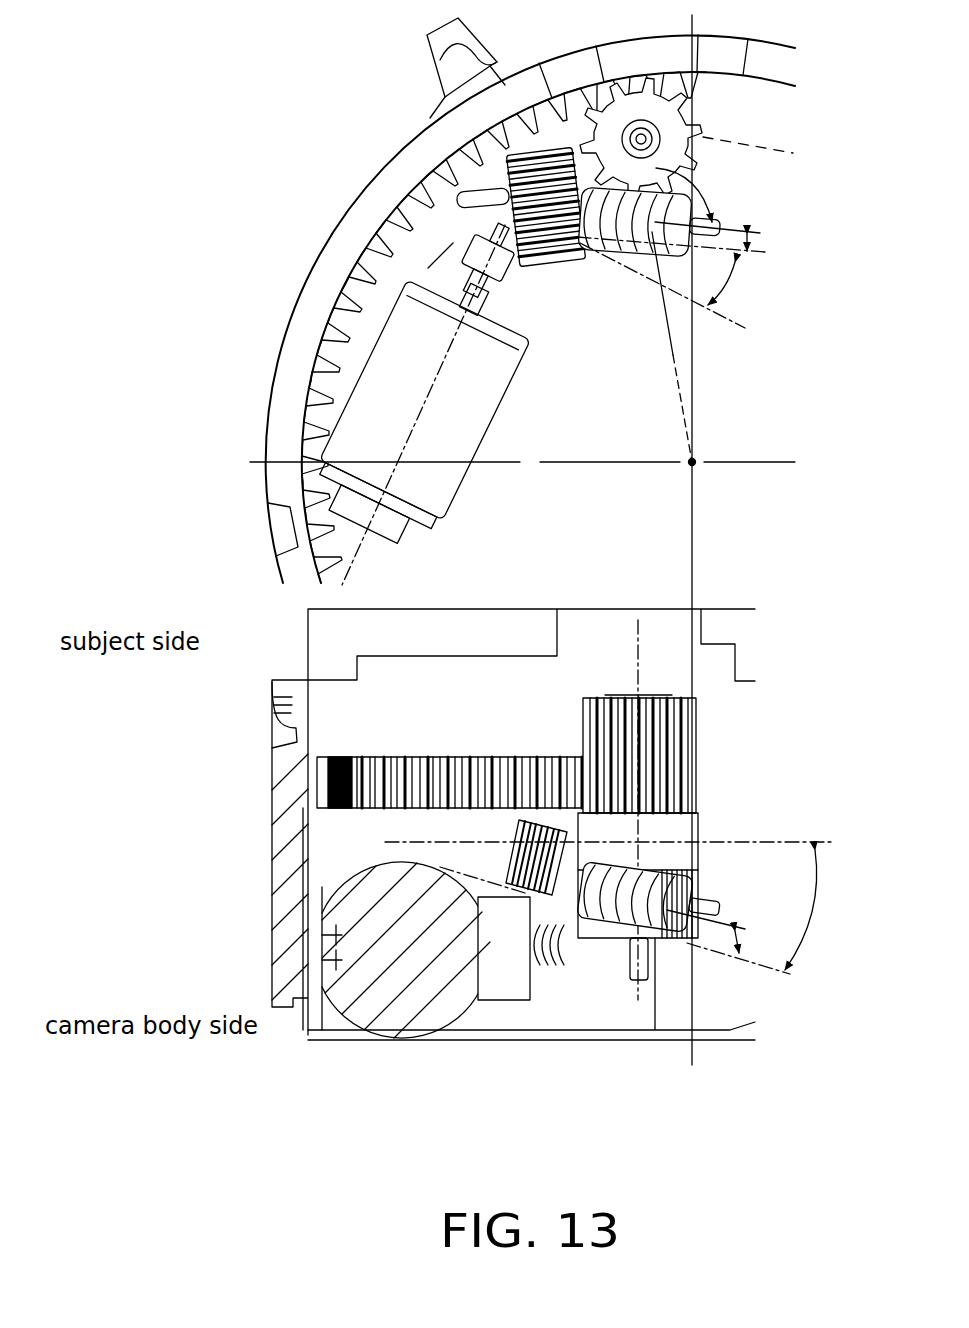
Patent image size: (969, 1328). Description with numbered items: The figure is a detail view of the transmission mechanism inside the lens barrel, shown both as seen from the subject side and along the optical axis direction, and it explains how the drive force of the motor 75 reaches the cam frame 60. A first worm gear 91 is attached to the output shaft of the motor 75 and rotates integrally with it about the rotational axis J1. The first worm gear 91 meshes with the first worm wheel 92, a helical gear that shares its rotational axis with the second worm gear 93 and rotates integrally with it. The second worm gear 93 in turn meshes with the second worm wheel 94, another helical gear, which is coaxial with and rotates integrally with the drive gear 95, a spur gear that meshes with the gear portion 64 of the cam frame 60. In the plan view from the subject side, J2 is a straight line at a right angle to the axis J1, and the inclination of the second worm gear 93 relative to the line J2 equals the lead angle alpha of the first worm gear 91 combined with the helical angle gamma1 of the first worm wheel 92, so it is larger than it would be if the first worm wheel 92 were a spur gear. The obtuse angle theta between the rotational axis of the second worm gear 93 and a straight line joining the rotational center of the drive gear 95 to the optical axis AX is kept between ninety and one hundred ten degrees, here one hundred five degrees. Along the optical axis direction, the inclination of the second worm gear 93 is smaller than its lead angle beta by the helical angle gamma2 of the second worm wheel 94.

The cam frame 60 is at (320, 282).
The gear portion 64 is at (318, 358).
The motor 75 is at (385, 420).
The first worm gear 91 is at (470, 247).
The first worm wheel 92 is at (520, 182).
The second worm gear 93 is at (655, 237).
The second worm wheel 94 is at (697, 935).
The drive gear 95 is at (705, 128).
The optical axis AX is at (692, 462).
The rotational axis of the first worm gear J1 is at (420, 418).
The straight line at a right angle to rotational axis J1 J2 is at (728, 323).
The obtuse angle theta is at (688, 195).
The lead angle of the first worm gear alpha is at (732, 284).
The lead angle of the second worm gear beta is at (809, 910).
The helical angle of the first worm wheel gamma1 is at (771, 249).
The helical angle of the second worm wheel gamma2 is at (757, 948).